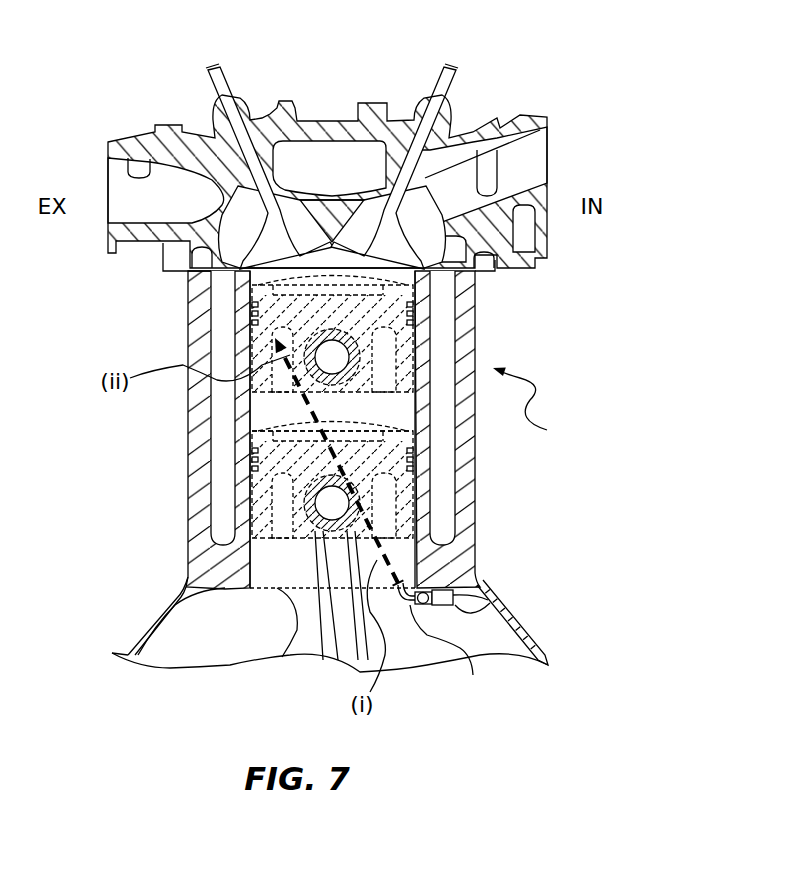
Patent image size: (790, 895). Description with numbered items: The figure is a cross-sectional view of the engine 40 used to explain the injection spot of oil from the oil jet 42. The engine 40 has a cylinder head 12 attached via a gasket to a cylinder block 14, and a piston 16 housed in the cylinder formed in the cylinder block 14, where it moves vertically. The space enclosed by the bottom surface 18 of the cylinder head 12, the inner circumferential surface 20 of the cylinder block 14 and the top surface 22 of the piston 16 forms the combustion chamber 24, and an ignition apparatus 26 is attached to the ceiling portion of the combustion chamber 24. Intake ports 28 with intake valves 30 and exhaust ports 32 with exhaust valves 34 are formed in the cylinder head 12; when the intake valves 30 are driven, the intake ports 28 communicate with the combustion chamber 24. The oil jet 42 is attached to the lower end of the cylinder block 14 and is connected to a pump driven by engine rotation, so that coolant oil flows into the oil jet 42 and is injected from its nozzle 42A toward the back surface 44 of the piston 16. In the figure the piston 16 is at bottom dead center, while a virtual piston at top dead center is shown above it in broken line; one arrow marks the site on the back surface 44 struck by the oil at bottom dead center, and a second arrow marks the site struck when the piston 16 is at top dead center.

The cylinder head 12 is at (327, 138).
The cylinder block 14 is at (321, 463).
The piston 16 is at (283, 657).
The bottom surface 18 is at (518, 270).
The inner circumferential surface 20 is at (262, 405).
The top surface 22 is at (345, 423).
The combustion chamber 24 is at (297, 427).
The ignition apparatus 26 is at (285, 138).
The intake ports 28 is at (467, 134).
The intake valves 30 is at (438, 78).
The exhaust ports 32 is at (139, 158).
The exhaust valves 34 is at (226, 78).
The engine 40 is at (531, 408).
The oil jet 42 is at (492, 603).
The nozzle 42A is at (445, 641).
The back surface 44 is at (402, 513).